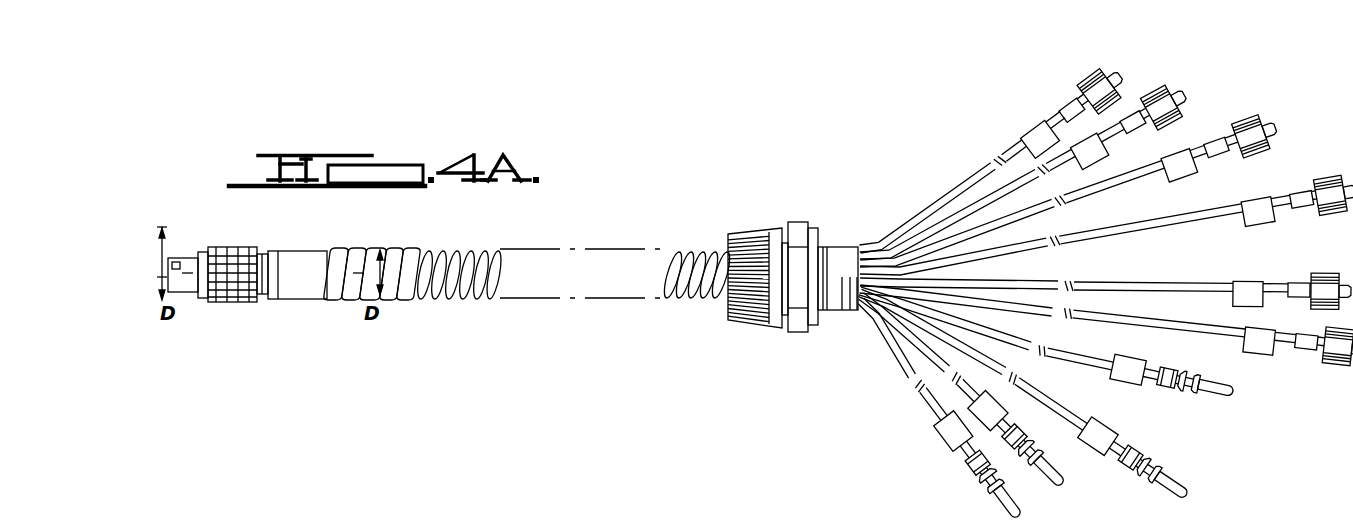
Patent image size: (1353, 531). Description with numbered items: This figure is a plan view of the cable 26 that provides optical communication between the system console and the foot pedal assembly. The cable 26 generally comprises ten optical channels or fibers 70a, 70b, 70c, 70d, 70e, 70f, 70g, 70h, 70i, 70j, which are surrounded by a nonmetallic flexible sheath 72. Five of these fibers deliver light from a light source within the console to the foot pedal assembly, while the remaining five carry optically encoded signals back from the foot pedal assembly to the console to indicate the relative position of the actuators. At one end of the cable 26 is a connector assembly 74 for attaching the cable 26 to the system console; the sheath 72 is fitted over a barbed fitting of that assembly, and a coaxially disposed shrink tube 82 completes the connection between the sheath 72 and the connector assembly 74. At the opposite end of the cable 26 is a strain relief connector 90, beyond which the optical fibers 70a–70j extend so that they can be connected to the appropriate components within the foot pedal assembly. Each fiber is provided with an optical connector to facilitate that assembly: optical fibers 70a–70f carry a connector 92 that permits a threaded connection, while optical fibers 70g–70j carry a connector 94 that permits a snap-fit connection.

The cable 26 is at (697, 222).
The nonmetallic flexible sheath 72 is at (677, 302).
The connector assembly 74 is at (233, 304).
The shrink tube 82 is at (396, 302).
The strain relief connector 90 is at (748, 308).
The connector 92 is at (1127, 74).
The connector 94 is at (1240, 393).
The optical fiber 70a is at (1017, 142).
The optical fiber 70b is at (970, 212).
The optical fiber 70c is at (1134, 177).
The optical fiber 70d is at (1186, 216).
The optical fiber 70e is at (1133, 284).
The optical fiber 70f is at (1178, 321).
The optical fiber 70g is at (1078, 352).
The optical fiber 70h is at (1065, 422).
The optical fiber 70i is at (894, 349).
The optical fiber 70j is at (928, 406).